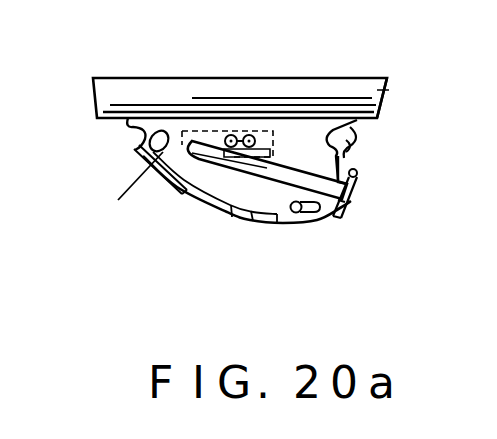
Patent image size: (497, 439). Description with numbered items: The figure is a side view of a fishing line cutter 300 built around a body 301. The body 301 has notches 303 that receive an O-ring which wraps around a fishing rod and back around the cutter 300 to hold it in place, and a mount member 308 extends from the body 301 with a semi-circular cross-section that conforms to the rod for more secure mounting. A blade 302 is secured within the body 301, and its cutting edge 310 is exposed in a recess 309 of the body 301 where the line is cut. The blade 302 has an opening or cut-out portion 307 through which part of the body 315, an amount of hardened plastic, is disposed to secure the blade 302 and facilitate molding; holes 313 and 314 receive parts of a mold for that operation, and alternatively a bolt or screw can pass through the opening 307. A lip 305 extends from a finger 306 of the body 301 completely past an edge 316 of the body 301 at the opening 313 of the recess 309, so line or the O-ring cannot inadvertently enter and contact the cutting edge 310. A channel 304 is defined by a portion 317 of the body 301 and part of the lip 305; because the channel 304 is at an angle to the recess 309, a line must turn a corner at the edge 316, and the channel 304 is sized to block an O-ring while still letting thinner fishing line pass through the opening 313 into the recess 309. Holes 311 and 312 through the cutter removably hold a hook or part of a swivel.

The fishing line cutter 300 is at (160, 70).
The body 301 is at (140, 181).
The blade 302 is at (172, 186).
The notches 303 is at (128, 138).
The channel 304 is at (355, 156).
The lip 305 is at (358, 178).
The finger 306 is at (231, 205).
The opening or cut-out portion 307 is at (283, 125).
The mount member 308 is at (393, 83).
The recess 309 is at (248, 225).
The cutting edge 310 is at (218, 204).
The hole 311 is at (135, 152).
The hole 312 is at (292, 212).
The opening 313 is at (227, 134).
The hole 314 is at (262, 130).
The part of the body 315 is at (247, 134).
The edge 316 is at (350, 205).
The portion of the body 317 is at (348, 148).